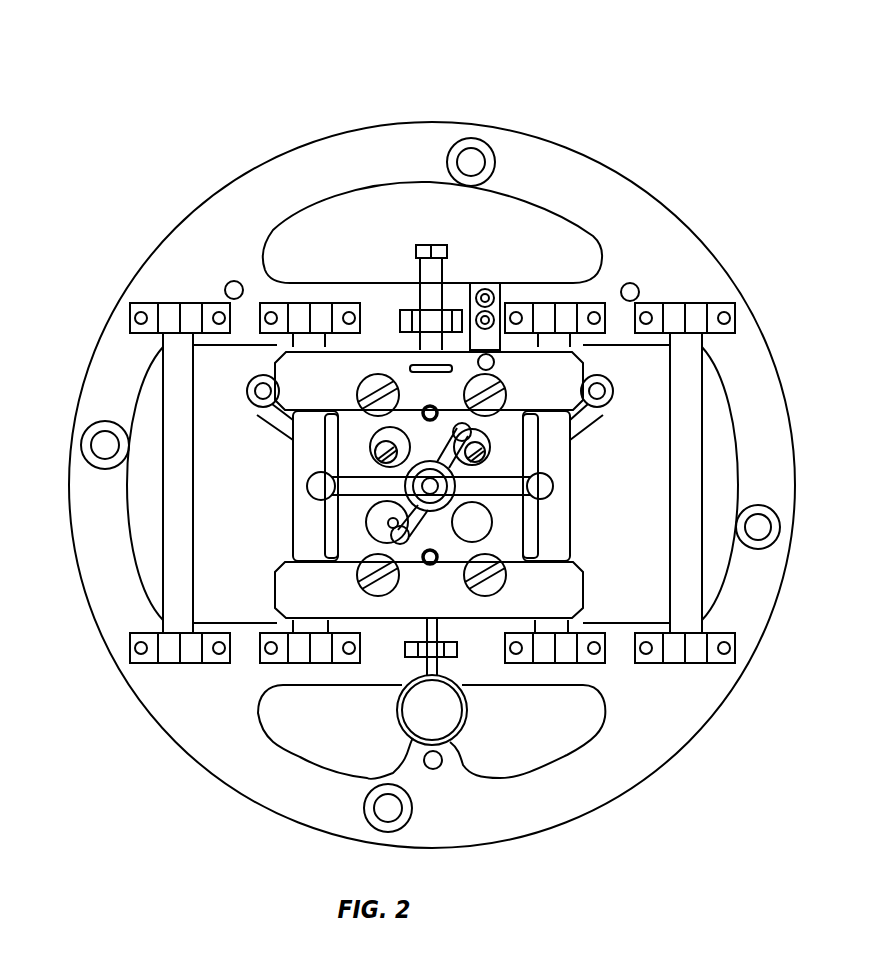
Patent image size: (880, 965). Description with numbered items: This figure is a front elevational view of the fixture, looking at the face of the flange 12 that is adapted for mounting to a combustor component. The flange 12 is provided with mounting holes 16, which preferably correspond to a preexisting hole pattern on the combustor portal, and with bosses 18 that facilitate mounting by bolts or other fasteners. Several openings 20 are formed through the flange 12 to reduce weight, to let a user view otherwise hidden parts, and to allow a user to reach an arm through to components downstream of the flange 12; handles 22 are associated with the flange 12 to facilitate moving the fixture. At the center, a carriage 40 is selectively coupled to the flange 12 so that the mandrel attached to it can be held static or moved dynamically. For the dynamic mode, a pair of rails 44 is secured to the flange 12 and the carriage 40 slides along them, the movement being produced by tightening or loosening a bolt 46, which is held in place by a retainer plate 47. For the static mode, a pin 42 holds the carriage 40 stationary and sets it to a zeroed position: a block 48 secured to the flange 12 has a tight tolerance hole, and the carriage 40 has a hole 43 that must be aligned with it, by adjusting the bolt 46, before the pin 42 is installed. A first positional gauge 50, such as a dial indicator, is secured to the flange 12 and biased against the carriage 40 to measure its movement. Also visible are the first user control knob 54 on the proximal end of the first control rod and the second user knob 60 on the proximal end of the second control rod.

The flange 12 is at (685, 710).
The mounting holes 16 is at (470, 162).
The bosses 18 is at (480, 140).
The openings 20 is at (337, 215).
The handles 22 is at (707, 395).
The carriage 40 is at (577, 597).
The pin 42 is at (502, 347).
The hole 43 is at (494, 364).
The rails 44 is at (310, 542).
The bolt 46 is at (448, 250).
The retainer plate 47 is at (420, 365).
The block 48 is at (488, 361).
The first positional gauge 50 is at (443, 705).
The first user control knob 54 is at (553, 486).
The second user knob 60 is at (411, 532).